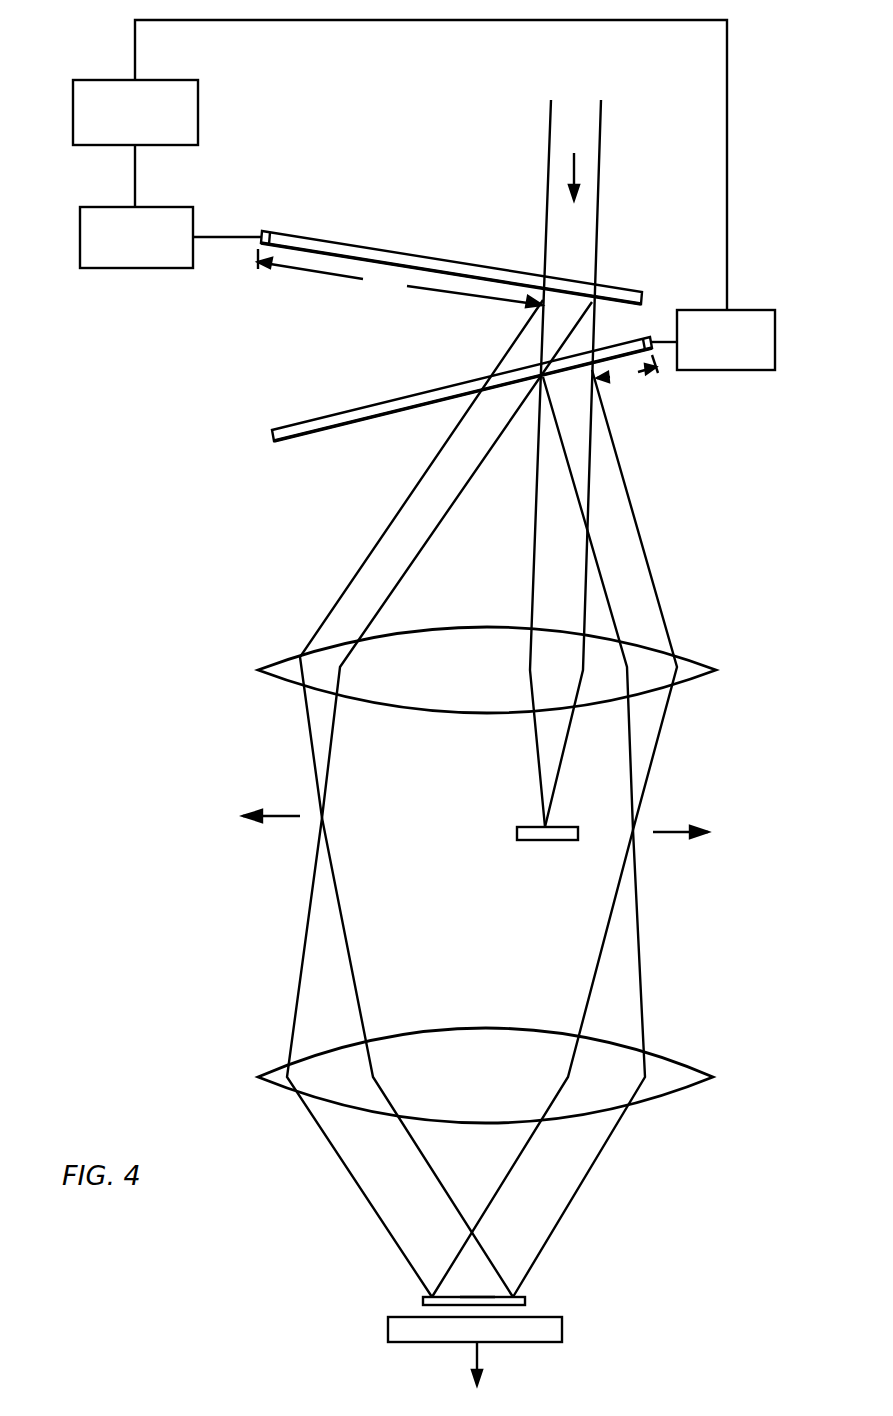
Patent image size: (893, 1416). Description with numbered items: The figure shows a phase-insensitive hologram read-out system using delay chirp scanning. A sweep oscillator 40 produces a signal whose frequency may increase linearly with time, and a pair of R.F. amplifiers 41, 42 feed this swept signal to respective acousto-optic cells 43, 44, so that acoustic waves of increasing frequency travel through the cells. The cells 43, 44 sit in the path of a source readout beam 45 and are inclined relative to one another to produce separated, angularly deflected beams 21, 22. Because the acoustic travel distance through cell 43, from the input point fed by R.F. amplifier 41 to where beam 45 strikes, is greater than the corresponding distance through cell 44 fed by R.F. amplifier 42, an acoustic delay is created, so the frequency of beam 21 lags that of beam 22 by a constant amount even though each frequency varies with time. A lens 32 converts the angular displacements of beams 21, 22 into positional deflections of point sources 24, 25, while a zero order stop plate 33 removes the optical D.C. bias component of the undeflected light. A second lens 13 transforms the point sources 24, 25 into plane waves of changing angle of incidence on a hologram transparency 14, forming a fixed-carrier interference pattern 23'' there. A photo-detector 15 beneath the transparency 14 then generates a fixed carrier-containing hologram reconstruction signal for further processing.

The sweep oscillator 40 is at (198, 110).
The R.F. amplifier 41 is at (147, 270).
The R.F. amplifier 42 is at (775, 338).
The acousto-optic cell 43 is at (420, 253).
The acousto-optic cell 44 is at (332, 428).
The source readout beam 45 is at (588, 158).
The angularly deflected beam 21 is at (382, 537).
The angularly deflected beam 22 is at (625, 520).
The lens 32 is at (688, 657).
The zero order stop plate 33 is at (530, 842).
The point source 24 is at (323, 817).
The point source 25 is at (637, 835).
The lens 13 is at (680, 1058).
The hologram transparency 14 is at (525, 1302).
The photo-detector 15 is at (562, 1337).
The interference pattern 23'' is at (520, 1277).